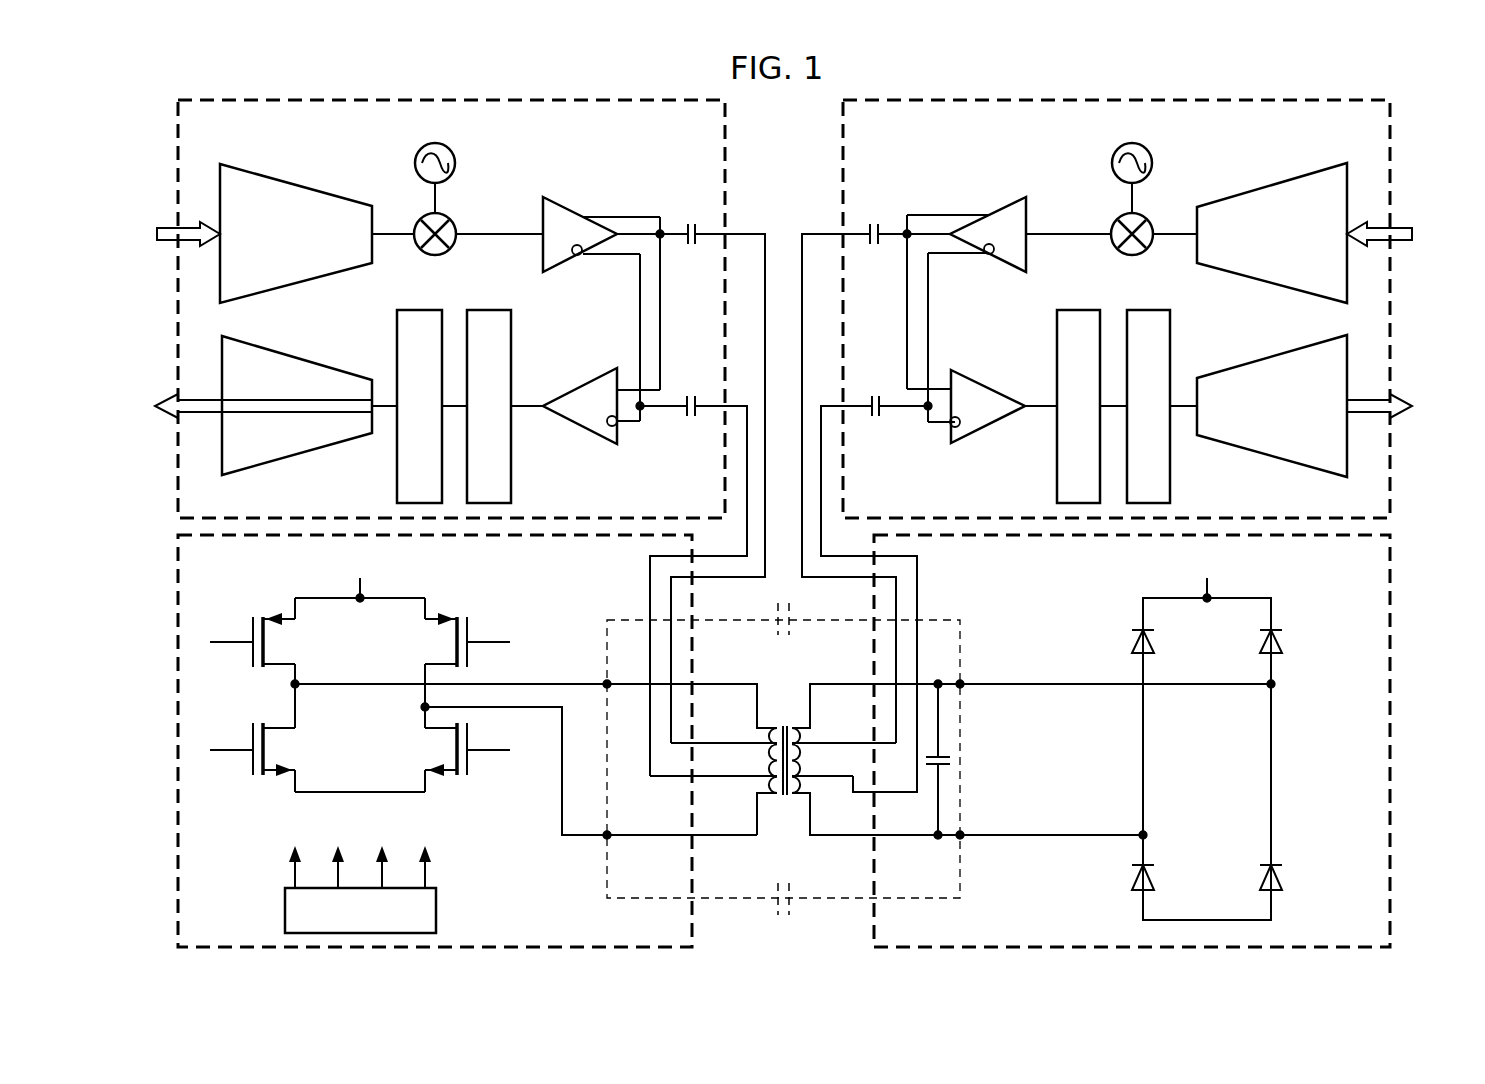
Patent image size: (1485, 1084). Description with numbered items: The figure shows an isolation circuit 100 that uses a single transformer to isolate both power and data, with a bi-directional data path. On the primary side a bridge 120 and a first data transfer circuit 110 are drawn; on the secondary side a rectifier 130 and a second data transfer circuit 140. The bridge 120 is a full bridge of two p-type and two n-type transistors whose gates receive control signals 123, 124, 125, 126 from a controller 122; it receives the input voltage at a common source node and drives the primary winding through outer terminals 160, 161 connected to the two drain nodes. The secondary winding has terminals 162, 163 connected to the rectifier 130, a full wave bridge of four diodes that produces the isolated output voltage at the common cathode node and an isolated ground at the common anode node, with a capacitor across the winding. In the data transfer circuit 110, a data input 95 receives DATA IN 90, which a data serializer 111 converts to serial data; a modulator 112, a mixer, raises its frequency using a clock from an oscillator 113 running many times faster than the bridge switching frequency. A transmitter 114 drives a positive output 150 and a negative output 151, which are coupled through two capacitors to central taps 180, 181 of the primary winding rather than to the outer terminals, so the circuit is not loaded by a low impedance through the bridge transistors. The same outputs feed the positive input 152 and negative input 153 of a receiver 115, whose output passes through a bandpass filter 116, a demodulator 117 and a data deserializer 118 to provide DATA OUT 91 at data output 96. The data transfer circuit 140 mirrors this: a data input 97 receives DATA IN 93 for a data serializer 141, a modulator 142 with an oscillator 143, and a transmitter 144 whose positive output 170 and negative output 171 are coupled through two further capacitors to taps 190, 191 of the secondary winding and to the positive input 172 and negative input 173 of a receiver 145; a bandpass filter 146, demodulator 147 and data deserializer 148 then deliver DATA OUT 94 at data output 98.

The isolation circuit 100 is at (208, 80).
The data transfer circuit 110 is at (176, 137).
The bridge 120 is at (176, 845).
The rectifier 130 is at (1392, 845).
The data transfer circuit 140 is at (1392, 137).
The DATA IN 90 is at (125, 205).
The DATA OUT 91 is at (125, 375).
The DATA IN 93 is at (1443, 205).
The DATA OUT 94 is at (1443, 372).
The data input 95 is at (210, 225).
The data output 96 is at (210, 398).
The data input 97 is at (1355, 225).
The data output 98 is at (1355, 400).
The data serializer 111 is at (300, 185).
The modulator 112 is at (422, 252).
The oscillator 113 is at (415, 150).
The transmitter 114 is at (540, 250).
The receiver 115 is at (578, 385).
The bandpass filter 116 is at (511, 455).
The demodulator 117 is at (397, 455).
The data deserializer 118 is at (305, 357).
The positive output 150 is at (549, 218).
The negative output 151 is at (590, 256).
The positive input 152 is at (625, 389).
The negative input 153 is at (630, 425).
The controller 122 is at (285, 910).
The control signal 123 is at (232, 640).
The control signal 124 is at (488, 640).
The control signal 125 is at (232, 752).
The control signal 126 is at (488, 752).
The data serializer 141 is at (1262, 185).
The modulator 142 is at (1145, 255).
The oscillator 143 is at (1152, 152).
The transmitter 144 is at (1027, 252).
The receiver 145 is at (990, 385).
The bandpass filter 146 is at (1057, 455).
The demodulator 147 is at (1170, 455).
The data deserializer 148 is at (1265, 355).
The positive output 170 is at (1022, 220).
The negative output 171 is at (975, 255).
The positive input 172 is at (942, 389).
The negative input 173 is at (935, 425).
The terminal 160 is at (745, 684).
The terminal 161 is at (745, 836).
The terminal 162 is at (818, 684).
The terminal 163 is at (820, 836).
The tap 180 is at (740, 743).
The tap 181 is at (740, 777).
The tap 190 is at (820, 743).
The tap 191 is at (822, 777).